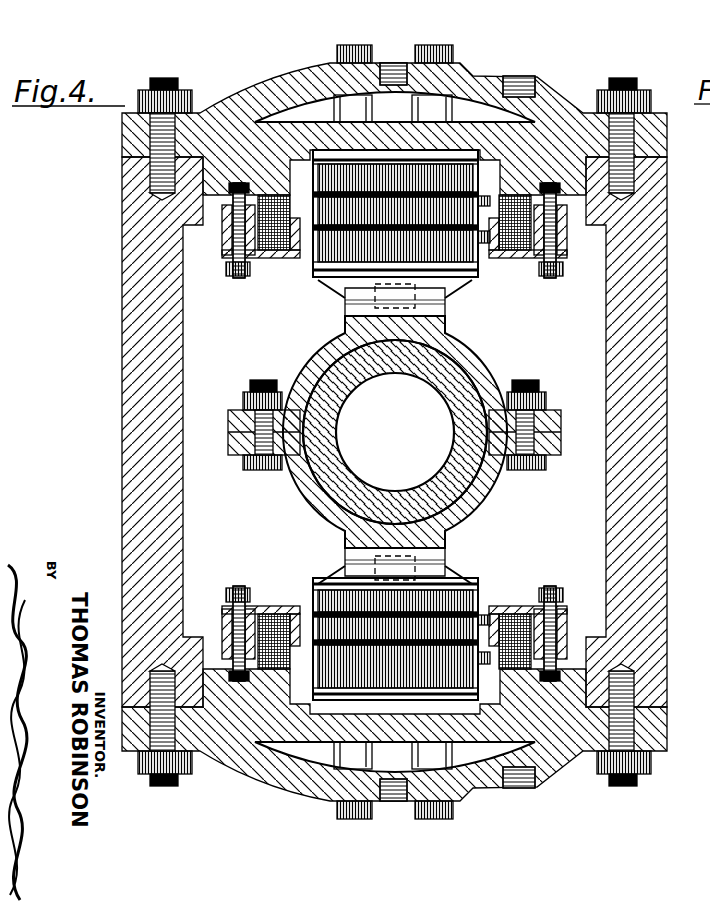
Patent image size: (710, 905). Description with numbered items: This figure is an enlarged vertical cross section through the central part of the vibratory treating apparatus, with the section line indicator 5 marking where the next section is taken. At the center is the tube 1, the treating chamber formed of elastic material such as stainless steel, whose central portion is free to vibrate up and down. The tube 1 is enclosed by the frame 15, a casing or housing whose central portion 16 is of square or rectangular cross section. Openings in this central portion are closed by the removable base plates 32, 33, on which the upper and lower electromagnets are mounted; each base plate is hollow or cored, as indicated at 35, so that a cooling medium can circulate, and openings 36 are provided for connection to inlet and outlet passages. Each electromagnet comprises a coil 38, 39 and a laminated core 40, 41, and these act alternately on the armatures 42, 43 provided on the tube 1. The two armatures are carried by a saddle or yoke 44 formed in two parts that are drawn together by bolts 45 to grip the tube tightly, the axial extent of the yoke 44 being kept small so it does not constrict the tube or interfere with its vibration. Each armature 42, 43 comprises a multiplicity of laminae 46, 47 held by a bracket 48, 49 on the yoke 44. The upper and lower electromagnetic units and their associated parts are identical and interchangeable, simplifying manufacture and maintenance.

The tube 1 is at (447, 482).
The section line 5- 5 is at (412, 50).
The frame 15 is at (676, 179).
The central portion of the casing 16 is at (648, 233).
The base plate 32 is at (538, 112).
The base plate 33 is at (565, 745).
The hollow or cored portion 35 is at (296, 118).
The opening 36 is at (388, 80).
The coil 38 is at (278, 242).
The coil 39 is at (281, 606).
The laminated core 40 is at (432, 228).
The laminated core 41 is at (447, 637).
The armature 42 is at (337, 288).
The armature 43 is at (340, 576).
The saddle or yoke 44 is at (311, 361).
The bolts 45 is at (262, 381).
The laminae 46 is at (442, 287).
The laminae 47 is at (452, 584).
The bracket 48 is at (445, 283).
The bracket 49 is at (334, 588).